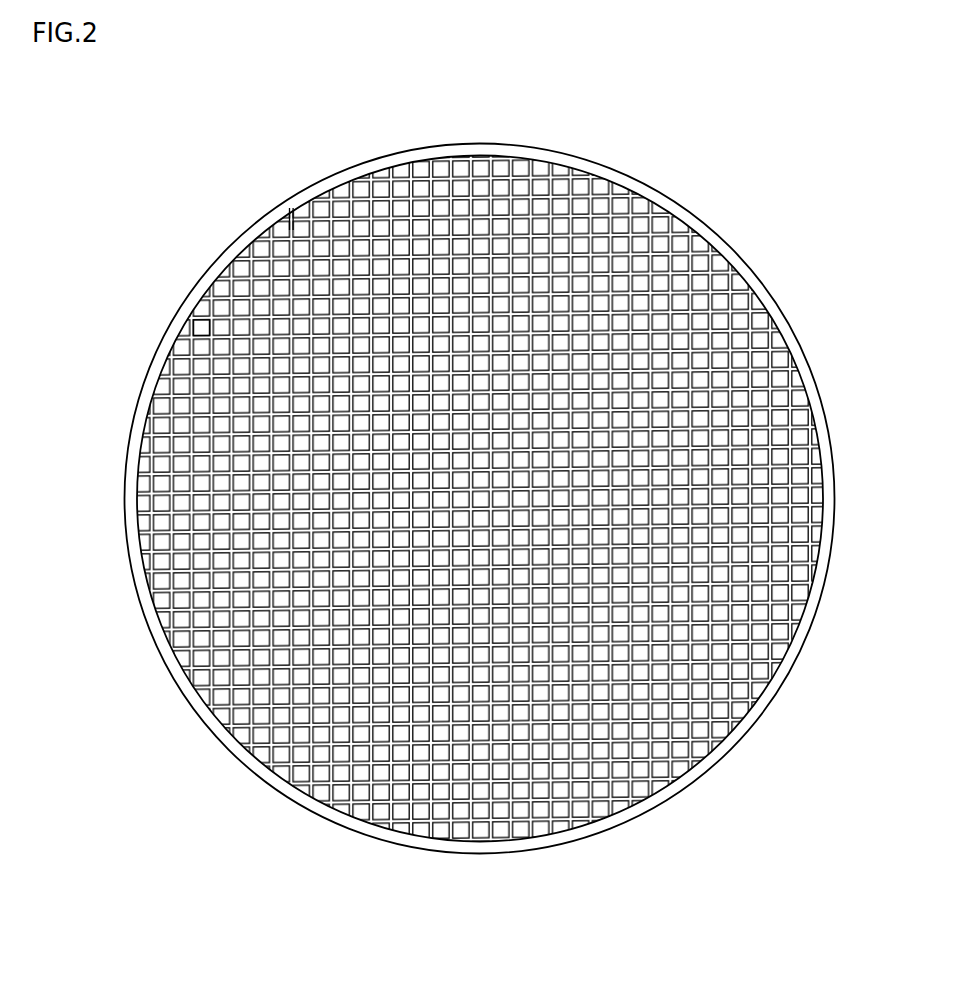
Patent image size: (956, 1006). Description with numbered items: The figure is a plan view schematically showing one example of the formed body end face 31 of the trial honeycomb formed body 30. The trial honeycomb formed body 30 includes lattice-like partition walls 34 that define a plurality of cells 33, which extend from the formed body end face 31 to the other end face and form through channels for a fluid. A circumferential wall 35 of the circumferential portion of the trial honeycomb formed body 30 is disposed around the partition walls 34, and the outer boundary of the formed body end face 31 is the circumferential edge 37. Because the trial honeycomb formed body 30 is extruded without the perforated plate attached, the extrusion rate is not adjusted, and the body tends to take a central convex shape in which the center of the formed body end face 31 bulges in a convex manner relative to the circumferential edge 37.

The trial honeycomb formed body 30 is at (435, 478).
The formed body end face 31 is at (460, 499).
The cells 33 is at (200, 334).
The partition walls 34 is at (293, 217).
The circumferential wall 35 is at (146, 375).
The circumferential edge 37 is at (435, 499).